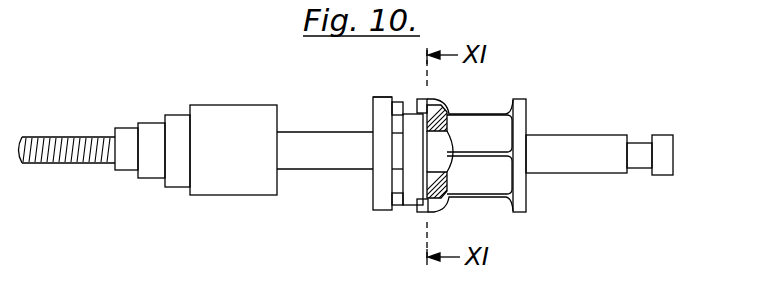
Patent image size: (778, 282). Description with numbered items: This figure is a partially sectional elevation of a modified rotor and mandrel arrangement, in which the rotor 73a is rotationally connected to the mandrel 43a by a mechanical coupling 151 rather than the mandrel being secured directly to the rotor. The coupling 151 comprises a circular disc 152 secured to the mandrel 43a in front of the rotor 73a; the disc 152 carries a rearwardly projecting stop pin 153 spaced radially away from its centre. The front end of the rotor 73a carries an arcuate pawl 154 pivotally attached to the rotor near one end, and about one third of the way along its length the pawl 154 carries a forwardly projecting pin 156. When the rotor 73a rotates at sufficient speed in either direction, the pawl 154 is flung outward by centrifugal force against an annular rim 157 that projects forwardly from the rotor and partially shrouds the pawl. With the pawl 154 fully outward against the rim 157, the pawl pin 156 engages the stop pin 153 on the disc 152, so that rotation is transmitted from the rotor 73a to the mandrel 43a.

The mandrel 43a is at (318, 140).
The mechanical coupling 151 is at (372, 94).
The circular disc 152 is at (383, 188).
The stop pin 153 is at (397, 102).
The arcuate pawl 154 is at (417, 188).
The pawl pin 156 is at (398, 198).
The annular rim 157 is at (421, 99).
The rotor 73a is at (485, 122).